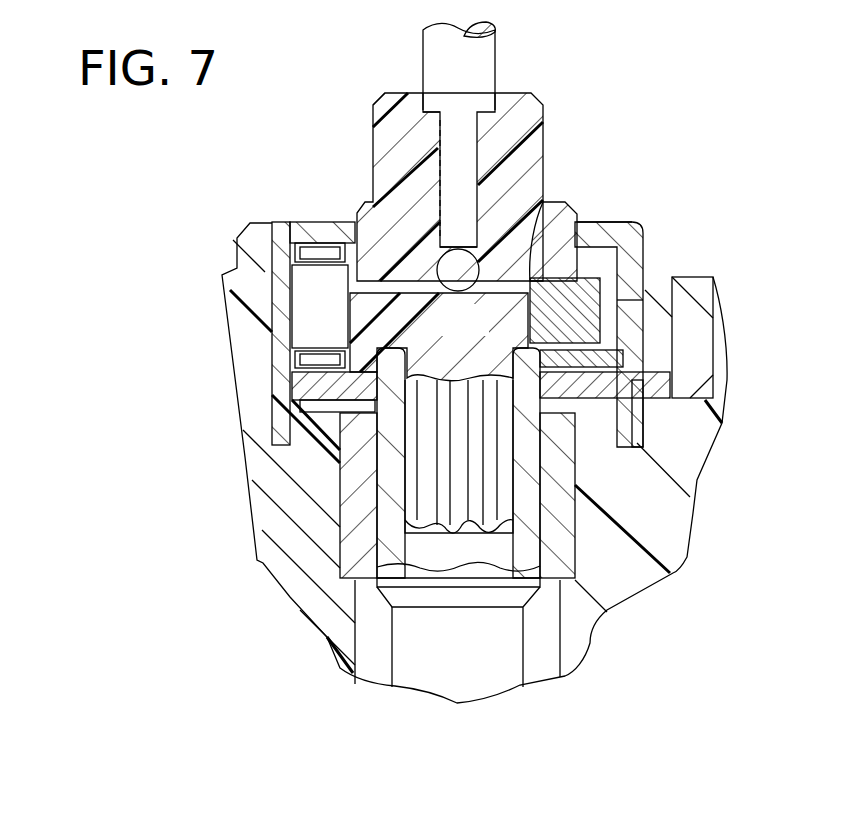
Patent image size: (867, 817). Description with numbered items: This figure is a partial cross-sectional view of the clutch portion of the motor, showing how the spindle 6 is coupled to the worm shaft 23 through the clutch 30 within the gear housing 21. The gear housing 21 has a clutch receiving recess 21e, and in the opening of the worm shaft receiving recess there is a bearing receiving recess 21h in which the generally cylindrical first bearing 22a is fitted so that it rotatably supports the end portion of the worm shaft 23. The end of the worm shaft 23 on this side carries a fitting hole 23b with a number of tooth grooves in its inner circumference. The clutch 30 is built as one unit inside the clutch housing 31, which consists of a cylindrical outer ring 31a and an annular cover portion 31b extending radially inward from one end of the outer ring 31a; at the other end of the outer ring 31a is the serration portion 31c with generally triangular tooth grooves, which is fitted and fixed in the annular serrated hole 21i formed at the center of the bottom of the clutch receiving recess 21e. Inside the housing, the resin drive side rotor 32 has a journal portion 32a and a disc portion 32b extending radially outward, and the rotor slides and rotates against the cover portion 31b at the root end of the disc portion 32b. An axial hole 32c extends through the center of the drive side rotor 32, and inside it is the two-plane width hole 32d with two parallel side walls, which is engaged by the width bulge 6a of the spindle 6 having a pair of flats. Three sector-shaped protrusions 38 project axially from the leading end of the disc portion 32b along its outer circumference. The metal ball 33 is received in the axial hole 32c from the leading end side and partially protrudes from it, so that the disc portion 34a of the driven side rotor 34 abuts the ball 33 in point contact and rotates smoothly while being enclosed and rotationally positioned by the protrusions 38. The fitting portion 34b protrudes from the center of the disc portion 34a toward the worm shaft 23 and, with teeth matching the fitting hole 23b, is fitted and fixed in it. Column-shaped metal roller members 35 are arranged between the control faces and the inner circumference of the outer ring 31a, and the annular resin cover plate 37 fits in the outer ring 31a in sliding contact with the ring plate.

The spindle 6 is at (428, 46).
The width bulge 6a is at (470, 148).
The clutch 30 is at (550, 82).
The drive side rotor 32 is at (548, 140).
The journal portion 32a is at (378, 130).
The disc portion 32b is at (645, 262).
The axial hole 32c is at (518, 292).
The two-plane width hole 32d is at (437, 160).
The ball 33 is at (445, 273).
The driven side rotor 34 is at (290, 355).
The disc portion 34a is at (546, 222).
The fitting portion 34b is at (487, 560).
The roller members 35 is at (305, 283).
The cover plate 37 is at (300, 390).
The protrusions 38 is at (645, 297).
The clutch housing 31 is at (647, 240).
The outer ring 31a is at (640, 338).
The cover portion 31b is at (612, 228).
The serration portion 31c is at (627, 435).
The gear housing 21 is at (700, 468).
The clutch receiving recess 21e is at (285, 312).
The bearing receiving recess 21h is at (340, 515).
The annular serrated hole 21i is at (640, 418).
The first bearing 22a is at (347, 562).
The worm shaft 23 is at (420, 683).
The fitting hole 23b is at (400, 468).